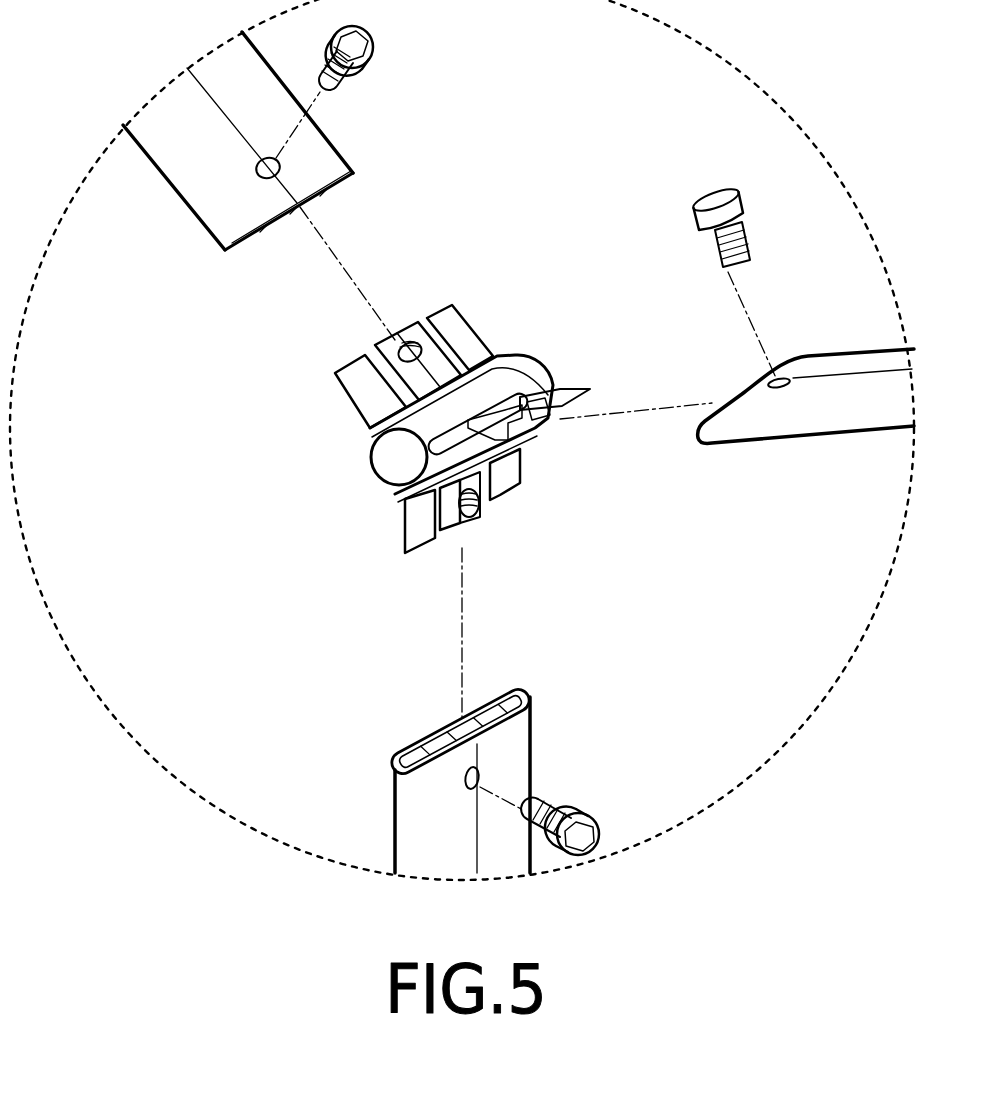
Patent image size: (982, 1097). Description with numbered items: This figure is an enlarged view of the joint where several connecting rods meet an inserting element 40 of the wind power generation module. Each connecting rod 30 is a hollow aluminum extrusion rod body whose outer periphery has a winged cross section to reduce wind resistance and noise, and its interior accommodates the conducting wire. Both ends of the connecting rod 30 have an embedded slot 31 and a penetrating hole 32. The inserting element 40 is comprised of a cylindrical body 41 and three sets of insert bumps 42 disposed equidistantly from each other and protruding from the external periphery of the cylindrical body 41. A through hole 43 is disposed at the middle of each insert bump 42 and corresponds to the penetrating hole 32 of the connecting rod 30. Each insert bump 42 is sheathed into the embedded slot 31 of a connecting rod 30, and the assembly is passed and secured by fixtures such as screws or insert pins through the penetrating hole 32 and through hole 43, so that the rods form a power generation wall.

The connecting rod 30 is at (330, 156).
The embedded slot 31 is at (285, 235).
The penetrating hole 32 is at (264, 157).
The inserting element 40 is at (432, 384).
The cylindrical body 41 is at (490, 378).
The insert bump 42 is at (355, 392).
The through hole 43 is at (414, 342).